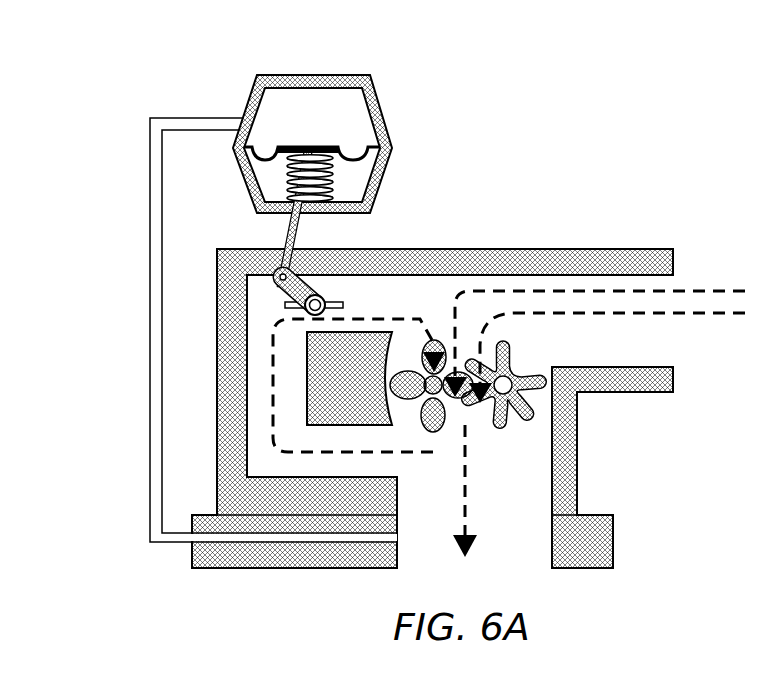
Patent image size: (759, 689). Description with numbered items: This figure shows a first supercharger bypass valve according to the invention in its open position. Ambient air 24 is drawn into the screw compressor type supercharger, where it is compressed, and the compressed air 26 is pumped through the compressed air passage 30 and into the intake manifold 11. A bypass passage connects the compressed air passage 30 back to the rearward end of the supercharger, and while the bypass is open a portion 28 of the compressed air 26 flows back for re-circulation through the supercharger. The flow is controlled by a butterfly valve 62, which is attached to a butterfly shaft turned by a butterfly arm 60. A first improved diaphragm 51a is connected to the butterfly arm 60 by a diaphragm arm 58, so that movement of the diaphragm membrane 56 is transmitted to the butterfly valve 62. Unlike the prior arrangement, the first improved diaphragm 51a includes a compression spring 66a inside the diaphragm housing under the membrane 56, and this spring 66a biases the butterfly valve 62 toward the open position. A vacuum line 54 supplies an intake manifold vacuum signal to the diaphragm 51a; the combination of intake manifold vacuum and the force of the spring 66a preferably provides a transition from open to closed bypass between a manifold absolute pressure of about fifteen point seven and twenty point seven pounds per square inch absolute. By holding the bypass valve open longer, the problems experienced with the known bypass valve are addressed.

The intake manifold 11 is at (600, 547).
The ambient air 24 is at (683, 288).
The compressed air 26 is at (468, 445).
The portion of the compressed air 28 is at (277, 378).
The compressed air passage 30 is at (497, 547).
The first improved diaphragm 51a is at (246, 100).
The vacuum line 54 is at (179, 125).
The membrane 56 is at (355, 160).
The diaphragm arm 58 is at (293, 232).
The butterfly arm 60 is at (302, 292).
The butterfly valve 62 is at (261, 270).
The compression spring 66a is at (338, 178).